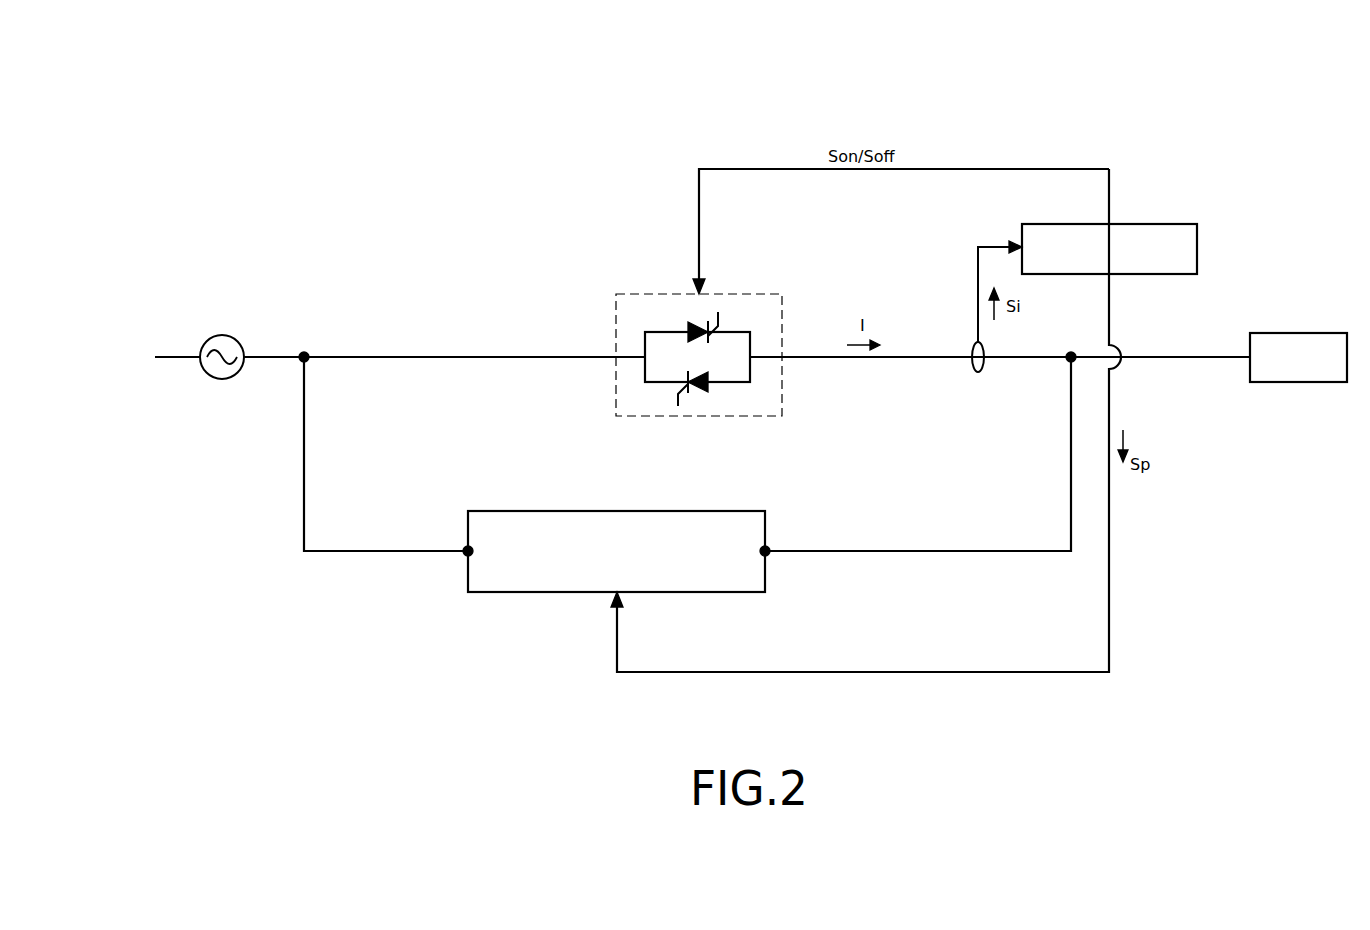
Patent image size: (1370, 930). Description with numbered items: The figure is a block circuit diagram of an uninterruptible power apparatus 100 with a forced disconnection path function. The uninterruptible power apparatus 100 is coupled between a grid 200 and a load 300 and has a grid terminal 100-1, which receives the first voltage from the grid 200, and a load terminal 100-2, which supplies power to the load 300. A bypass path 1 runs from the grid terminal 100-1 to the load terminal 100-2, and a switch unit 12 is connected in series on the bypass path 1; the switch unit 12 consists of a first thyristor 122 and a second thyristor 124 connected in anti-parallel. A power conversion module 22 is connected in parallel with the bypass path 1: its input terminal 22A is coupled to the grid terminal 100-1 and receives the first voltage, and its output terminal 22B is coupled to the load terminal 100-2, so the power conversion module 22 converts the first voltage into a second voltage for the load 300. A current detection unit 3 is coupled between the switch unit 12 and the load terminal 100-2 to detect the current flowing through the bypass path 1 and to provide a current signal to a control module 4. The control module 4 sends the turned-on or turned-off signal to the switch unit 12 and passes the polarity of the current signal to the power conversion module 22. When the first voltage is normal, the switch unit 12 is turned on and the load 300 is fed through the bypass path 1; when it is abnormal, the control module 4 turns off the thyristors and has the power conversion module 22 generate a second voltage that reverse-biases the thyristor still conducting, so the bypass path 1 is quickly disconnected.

The uninterruptible power apparatus 100 is at (602, 65).
The grid 200 is at (222, 335).
The grid terminal 100-1 is at (306, 352).
The bypass path 1 is at (596, 288).
The switch unit 12 is at (757, 303).
The first thyristor 122 is at (682, 322).
The second thyristor 124 is at (667, 390).
The current detection unit 3 is at (975, 372).
The control module 4 is at (1180, 233).
The load 300 is at (1307, 342).
The load terminal 100-2 is at (1075, 362).
The power conversion module 22 is at (478, 572).
The input terminal 22A is at (445, 543).
The output terminal 22B is at (781, 543).